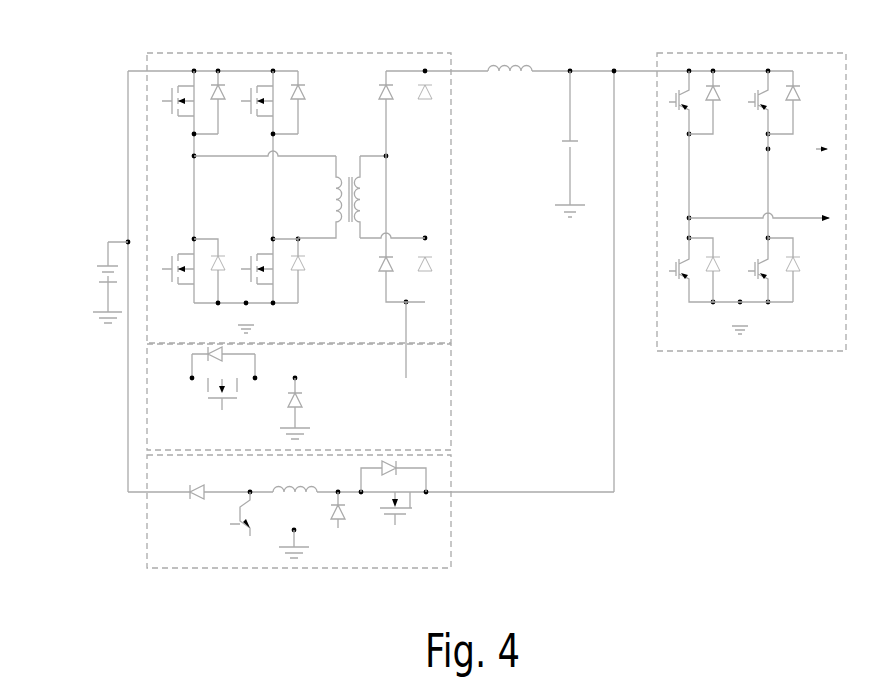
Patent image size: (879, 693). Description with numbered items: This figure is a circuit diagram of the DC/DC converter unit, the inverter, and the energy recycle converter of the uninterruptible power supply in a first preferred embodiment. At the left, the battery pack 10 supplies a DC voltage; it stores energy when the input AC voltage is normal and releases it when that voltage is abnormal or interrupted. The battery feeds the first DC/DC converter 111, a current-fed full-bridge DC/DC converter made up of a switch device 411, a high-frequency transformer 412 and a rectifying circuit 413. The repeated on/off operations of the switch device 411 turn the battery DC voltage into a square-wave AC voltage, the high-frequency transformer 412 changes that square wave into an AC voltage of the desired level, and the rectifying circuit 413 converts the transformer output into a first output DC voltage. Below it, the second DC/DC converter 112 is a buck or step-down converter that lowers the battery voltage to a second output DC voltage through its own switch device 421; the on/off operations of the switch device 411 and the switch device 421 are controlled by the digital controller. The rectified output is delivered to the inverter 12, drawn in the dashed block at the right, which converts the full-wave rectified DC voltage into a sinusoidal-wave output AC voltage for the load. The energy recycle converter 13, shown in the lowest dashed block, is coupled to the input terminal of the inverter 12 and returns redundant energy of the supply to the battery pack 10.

The battery pack 10 is at (97, 277).
The inverter 12 is at (752, 353).
The energy recycle converter 13 is at (453, 538).
The first DC/DC converter 111 is at (452, 250).
The second DC/DC converter 112 is at (334, 397).
The switch device 411 is at (252, 60).
The high-frequency transformer 412 is at (347, 154).
The rectifying circuit 413 is at (404, 60).
The switch device 421 is at (189, 381).